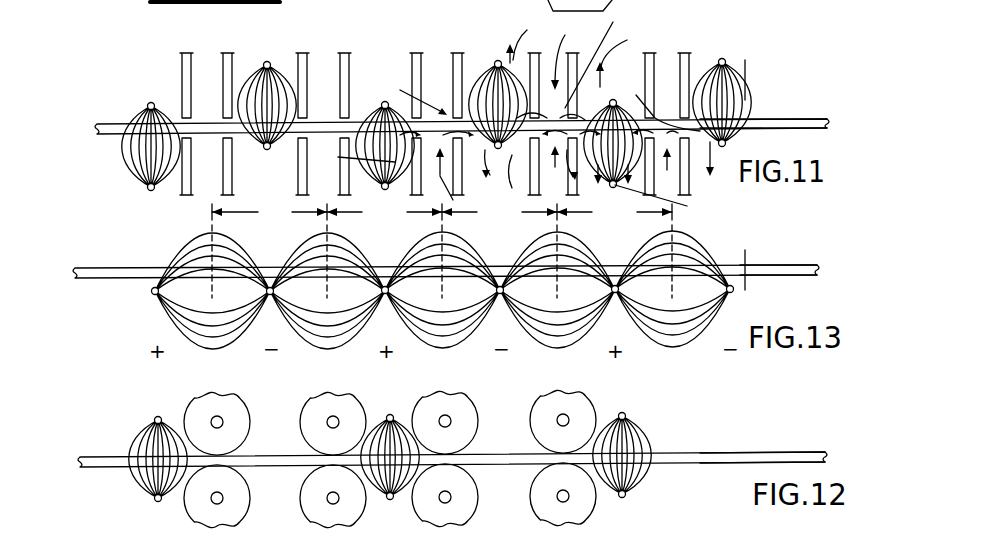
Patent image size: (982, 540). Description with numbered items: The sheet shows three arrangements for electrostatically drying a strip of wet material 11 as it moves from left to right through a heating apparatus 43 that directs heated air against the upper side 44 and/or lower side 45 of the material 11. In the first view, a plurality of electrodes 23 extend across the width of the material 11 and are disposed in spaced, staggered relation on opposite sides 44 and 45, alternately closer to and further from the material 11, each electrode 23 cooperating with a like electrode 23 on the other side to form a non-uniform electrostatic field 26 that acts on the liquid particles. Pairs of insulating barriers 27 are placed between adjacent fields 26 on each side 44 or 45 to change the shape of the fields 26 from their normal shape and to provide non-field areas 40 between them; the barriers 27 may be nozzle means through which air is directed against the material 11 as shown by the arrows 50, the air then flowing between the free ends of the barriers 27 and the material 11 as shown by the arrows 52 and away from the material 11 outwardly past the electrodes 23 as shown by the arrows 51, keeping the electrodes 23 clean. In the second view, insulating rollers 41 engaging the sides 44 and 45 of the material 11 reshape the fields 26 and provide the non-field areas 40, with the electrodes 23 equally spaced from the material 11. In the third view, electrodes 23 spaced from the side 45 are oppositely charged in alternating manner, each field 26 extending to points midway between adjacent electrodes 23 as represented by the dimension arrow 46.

In FIG. 11, the strip of wet material 11 is at (765, 118).
In FIG. 13, the strip of wet material 11 is at (768, 267).
In FIG. 12, the strip of wet material 11 is at (765, 454).
In FIG. 11, the electrodes 23 is at (151, 103).
In FIG. 13, the electrodes 23 is at (153, 294).
In FIG. 12, the electrodes 23 is at (623, 414).
In FIG. 11, the electrostatic fields 26 is at (255, 68).
In FIG. 13, the electrostatic fields 26 is at (272, 258).
In FIG. 12, the electrostatic fields 26 is at (140, 482).
In FIG. 11, the insulating barriers 27 is at (224, 60).
In FIG. 11, the non-field areas 40 is at (437, 103).
In FIG. 12, the non-field areas 40 is at (500, 437).
In FIG. 12, the insulating rollers 41 is at (455, 410).
In FIG. 11, the heating apparatus 43 is at (759, 78).
In FIG. 13, the heating apparatus 43 is at (747, 255).
In FIG. 11, the upper side 44 is at (800, 118).
In FIG. 13, the upper side 44 is at (800, 265).
In FIG. 12, the upper side 44 is at (710, 454).
In FIG. 11, the lower side 45 is at (800, 130).
In FIG. 13, the lower side 45 is at (800, 277).
In FIG. 12, the lower side 45 is at (740, 464).
In FIG. 13, the dimension arrow 46 is at (442, 249).
In FIG. 11, the arrows of fluid flow 50 is at (712, 190).
In FIG. 11, the arrows of outward air flow 51 is at (750, 148).
In FIG. 11, the arrows of fluid between barriers and material 52 is at (536, 100).